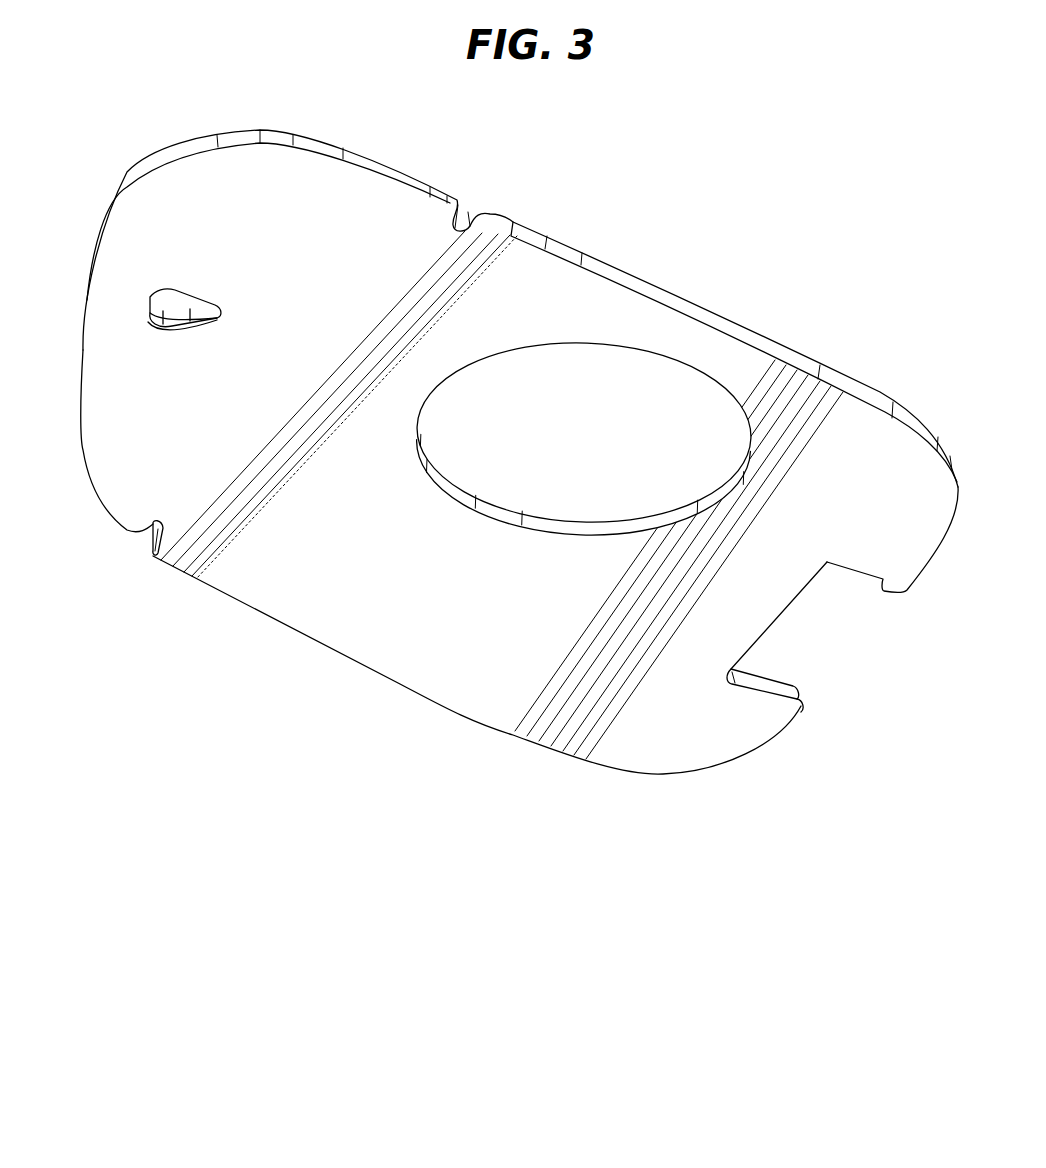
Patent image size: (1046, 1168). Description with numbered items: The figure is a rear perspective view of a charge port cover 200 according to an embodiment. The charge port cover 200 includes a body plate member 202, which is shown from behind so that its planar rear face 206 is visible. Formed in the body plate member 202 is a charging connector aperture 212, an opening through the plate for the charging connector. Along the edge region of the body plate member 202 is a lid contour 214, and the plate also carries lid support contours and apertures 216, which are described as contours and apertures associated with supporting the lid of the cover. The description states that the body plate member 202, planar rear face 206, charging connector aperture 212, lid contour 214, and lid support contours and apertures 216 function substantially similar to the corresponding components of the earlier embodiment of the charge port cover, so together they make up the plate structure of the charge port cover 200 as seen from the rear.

The charge port cover 200 is at (501, 518).
The body plate member 202 is at (245, 160).
The planar rear face 206 is at (462, 660).
The charging connector aperture 212 is at (628, 352).
The lid contour 214 is at (786, 602).
The lid support contours and apertures 216 is at (152, 296).